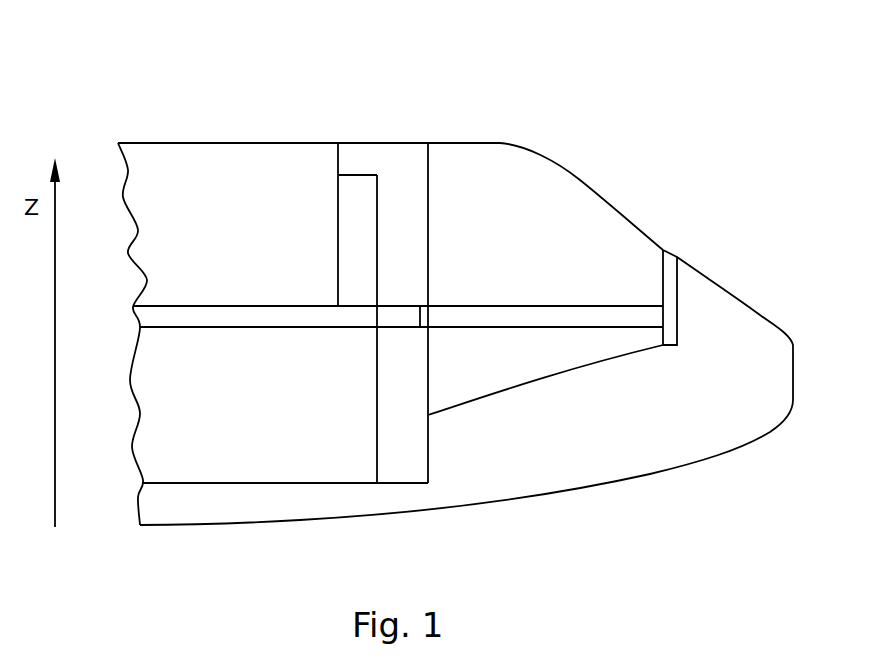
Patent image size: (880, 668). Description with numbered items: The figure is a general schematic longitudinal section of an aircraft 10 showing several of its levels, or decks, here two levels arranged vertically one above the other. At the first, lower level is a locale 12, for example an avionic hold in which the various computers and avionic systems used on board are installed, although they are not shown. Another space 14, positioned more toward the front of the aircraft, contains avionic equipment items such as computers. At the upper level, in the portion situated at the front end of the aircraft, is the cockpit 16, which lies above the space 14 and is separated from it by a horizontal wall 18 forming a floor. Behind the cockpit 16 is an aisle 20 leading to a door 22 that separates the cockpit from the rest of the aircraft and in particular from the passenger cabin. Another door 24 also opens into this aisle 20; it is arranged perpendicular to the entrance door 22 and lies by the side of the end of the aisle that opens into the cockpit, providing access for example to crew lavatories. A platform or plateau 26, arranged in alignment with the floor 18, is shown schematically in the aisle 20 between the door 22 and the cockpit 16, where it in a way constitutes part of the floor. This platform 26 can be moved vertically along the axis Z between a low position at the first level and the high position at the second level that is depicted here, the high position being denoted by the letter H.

The aircraft 10 is at (714, 166).
The locale 12 is at (240, 443).
The space 14 is at (493, 370).
The cockpit 16 is at (548, 220).
The horizontal wall 18 is at (570, 317).
The aisle 20 is at (403, 176).
The door 22 is at (338, 220).
The door 24 is at (358, 203).
The platform 26 is at (408, 315).